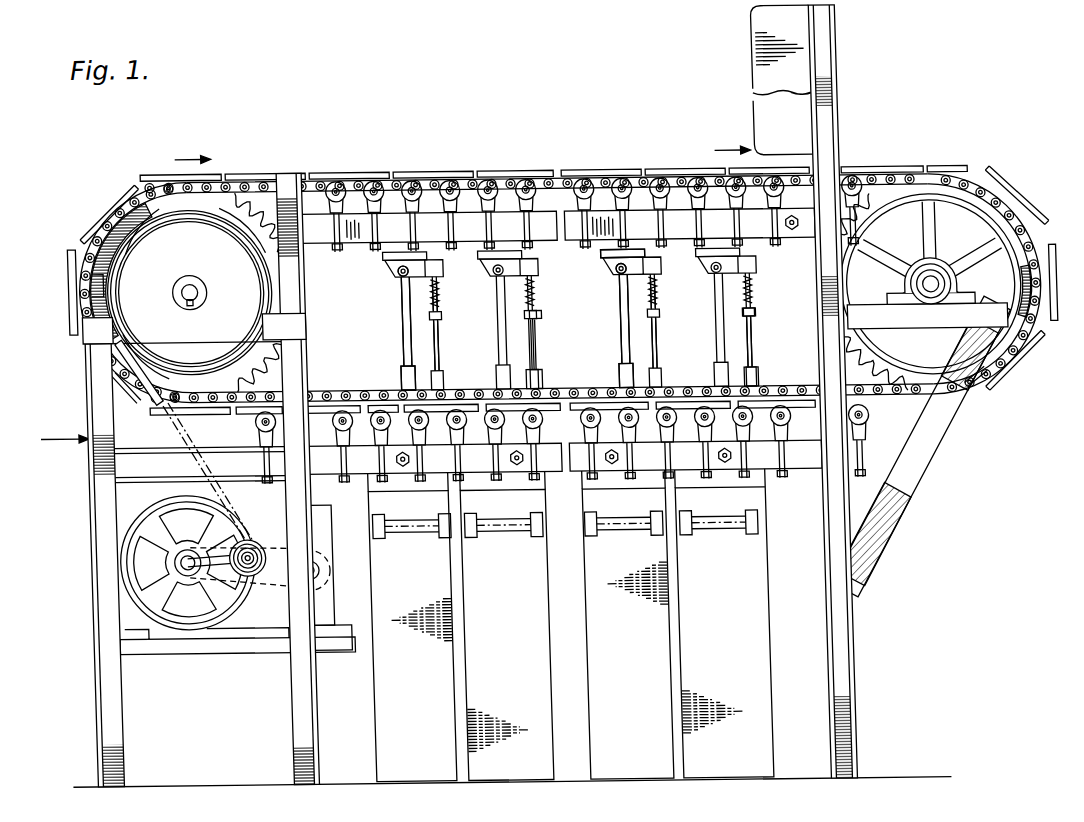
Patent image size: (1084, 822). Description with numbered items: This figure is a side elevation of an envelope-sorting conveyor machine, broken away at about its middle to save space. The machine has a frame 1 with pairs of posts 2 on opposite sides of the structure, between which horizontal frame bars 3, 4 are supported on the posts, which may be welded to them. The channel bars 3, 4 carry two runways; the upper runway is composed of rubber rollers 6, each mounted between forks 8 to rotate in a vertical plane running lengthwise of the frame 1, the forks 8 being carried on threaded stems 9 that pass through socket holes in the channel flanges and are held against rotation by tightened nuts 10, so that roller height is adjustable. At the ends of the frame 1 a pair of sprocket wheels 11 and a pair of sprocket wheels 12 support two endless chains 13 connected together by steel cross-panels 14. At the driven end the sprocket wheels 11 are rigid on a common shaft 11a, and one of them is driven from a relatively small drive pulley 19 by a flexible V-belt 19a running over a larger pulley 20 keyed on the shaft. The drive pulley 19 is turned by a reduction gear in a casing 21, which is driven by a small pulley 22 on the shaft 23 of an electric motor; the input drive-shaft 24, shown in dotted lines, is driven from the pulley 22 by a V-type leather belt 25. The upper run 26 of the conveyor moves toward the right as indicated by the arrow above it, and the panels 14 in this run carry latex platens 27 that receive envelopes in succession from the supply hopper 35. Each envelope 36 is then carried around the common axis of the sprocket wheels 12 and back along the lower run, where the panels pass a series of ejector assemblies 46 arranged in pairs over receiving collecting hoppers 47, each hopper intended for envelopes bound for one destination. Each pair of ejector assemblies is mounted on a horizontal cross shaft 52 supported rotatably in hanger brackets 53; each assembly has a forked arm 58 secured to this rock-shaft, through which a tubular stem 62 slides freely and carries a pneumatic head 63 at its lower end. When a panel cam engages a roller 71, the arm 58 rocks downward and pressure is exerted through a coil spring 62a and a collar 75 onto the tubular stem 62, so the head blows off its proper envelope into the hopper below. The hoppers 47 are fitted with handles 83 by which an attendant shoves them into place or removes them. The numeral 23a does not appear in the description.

The frame 1 is at (523, 476).
The posts 2 is at (856, 668).
The horizontal frame bar 3 is at (215, 449).
The horizontal frame bar 4 is at (545, 240).
The rubber rollers 6 is at (975, 157).
The forks 8 is at (331, 434).
The stems 9 is at (500, 224).
The nuts 10 is at (374, 250).
The sprocket wheels 11 is at (202, 370).
The common shaft 11a is at (195, 280).
The sprocket wheels 12 is at (935, 236).
The endless chains 13 is at (275, 170).
The cross-panels 14 is at (146, 179).
The drive pulley 19 is at (243, 580).
The V-belt 19a is at (160, 417).
The pulley 20 is at (142, 340).
The casing 21 is at (325, 606).
The pulley 22 is at (170, 556).
The shaft 23 is at (187, 584).
The pulley 23a is at (232, 538).
The input drive-shaft 24 is at (330, 568).
The V-type leather belt 25 is at (200, 525).
The upper run 26 is at (647, 172).
The platens 27 is at (415, 170).
The supply hopper 35 is at (760, 64).
The envelope 36 is at (1032, 210).
The ejector assemblies 46 is at (432, 331).
The receiving collecting hoppers 47 is at (571, 625).
The cross shaft 52 is at (400, 270).
The hanger brackets 53 is at (610, 256).
The arm 58 is at (447, 268).
The tubular stem 62 is at (441, 354).
The coil spring 62a is at (442, 293).
The pneumatic head 63 is at (545, 378).
The roller 71 is at (400, 374).
The collar 75 is at (552, 312).
The handles 83 is at (514, 526).